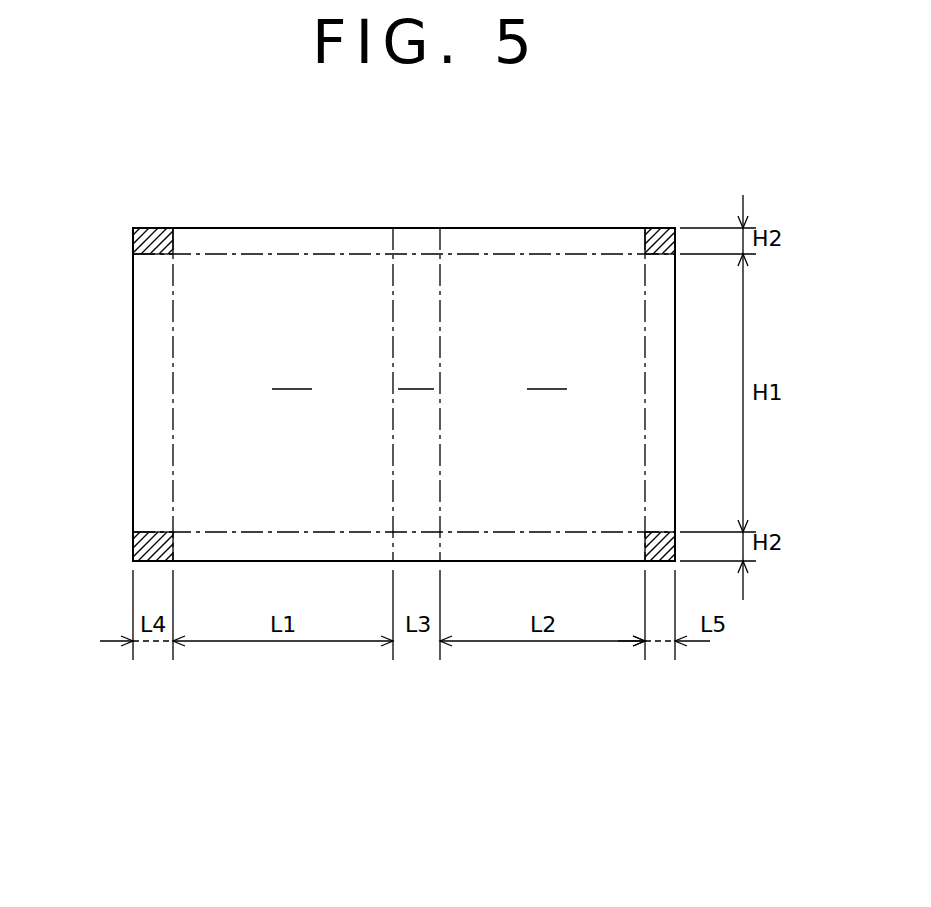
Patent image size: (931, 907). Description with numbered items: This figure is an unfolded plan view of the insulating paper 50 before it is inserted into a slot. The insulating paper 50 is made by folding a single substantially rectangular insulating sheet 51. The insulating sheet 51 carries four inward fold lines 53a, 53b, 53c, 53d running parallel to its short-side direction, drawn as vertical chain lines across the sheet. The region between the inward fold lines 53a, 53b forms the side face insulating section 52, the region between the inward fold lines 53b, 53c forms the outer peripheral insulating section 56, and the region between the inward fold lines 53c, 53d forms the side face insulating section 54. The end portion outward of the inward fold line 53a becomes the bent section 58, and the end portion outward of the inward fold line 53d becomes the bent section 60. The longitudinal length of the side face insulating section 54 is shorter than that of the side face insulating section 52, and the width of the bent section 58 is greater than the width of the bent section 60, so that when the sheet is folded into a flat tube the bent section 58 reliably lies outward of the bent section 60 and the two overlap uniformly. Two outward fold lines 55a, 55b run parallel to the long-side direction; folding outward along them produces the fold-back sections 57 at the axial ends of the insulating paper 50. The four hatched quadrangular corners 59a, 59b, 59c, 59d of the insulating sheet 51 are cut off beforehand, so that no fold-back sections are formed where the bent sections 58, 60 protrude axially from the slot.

The insulating paper 50 is at (622, 172).
The insulating sheet 51 is at (458, 228).
The side face insulating section 52 is at (292, 372).
The inward fold line 53a is at (173, 333).
The inward fold line 53b is at (393, 308).
The inward fold line 53c is at (440, 306).
The inward fold line 53d is at (645, 320).
The side face insulating section 54 is at (547, 372).
The outward fold line 55a is at (273, 254).
The outward fold line 55b is at (282, 532).
The outer peripheral insulating section 56 is at (416, 372).
The fold-back section 57 is at (548, 228).
The bent section 58 is at (150, 472).
The corner 59a is at (160, 228).
The corner 59b is at (135, 550).
The corner 59c is at (655, 228).
The corner 59d is at (672, 548).
The bent section 60 is at (660, 460).